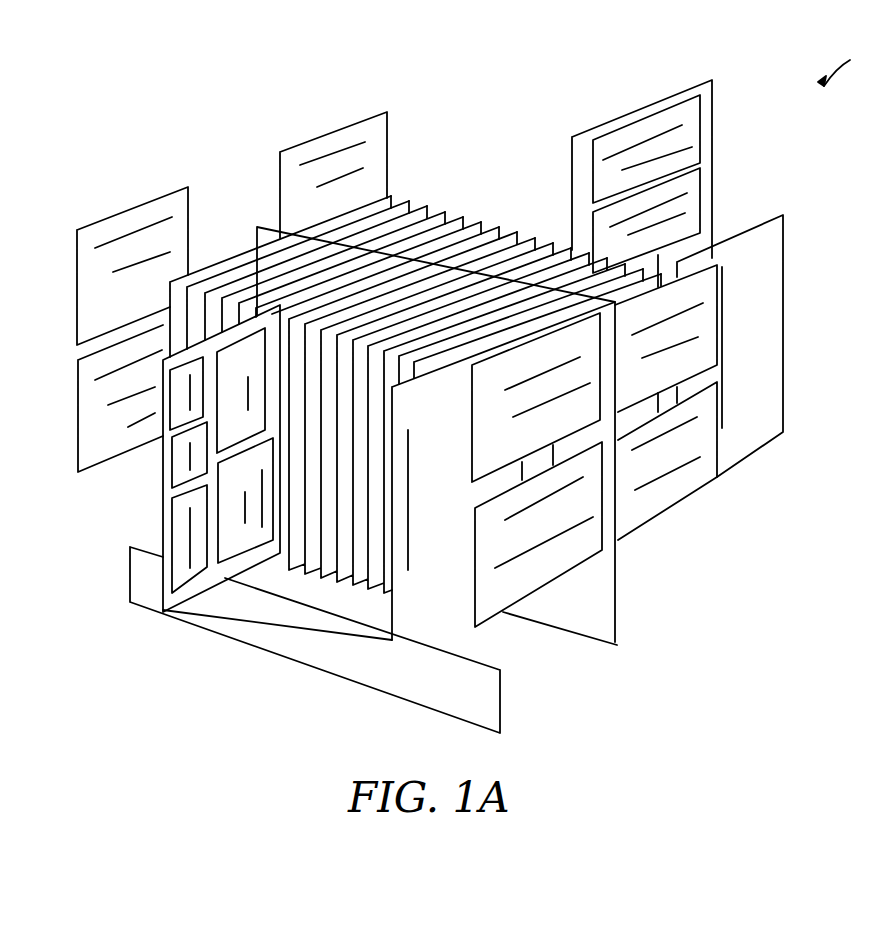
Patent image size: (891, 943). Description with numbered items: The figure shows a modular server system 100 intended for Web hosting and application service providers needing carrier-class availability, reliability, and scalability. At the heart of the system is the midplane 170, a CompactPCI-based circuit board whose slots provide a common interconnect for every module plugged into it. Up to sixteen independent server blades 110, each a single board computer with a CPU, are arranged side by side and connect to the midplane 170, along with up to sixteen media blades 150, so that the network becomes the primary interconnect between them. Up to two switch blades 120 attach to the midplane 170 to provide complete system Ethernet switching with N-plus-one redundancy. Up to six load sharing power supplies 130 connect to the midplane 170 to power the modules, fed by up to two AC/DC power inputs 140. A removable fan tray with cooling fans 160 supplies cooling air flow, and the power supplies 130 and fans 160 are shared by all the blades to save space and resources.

The modular server system 100 is at (853, 65).
The server blade 110 is at (313, 305).
The switch blade 120 is at (392, 516).
The power supply 130 is at (77, 295).
The power input 140 is at (337, 130).
The media blade 150 is at (455, 207).
The removable fan tray with cooling fans 160 is at (300, 664).
The midplane 170 is at (617, 601).